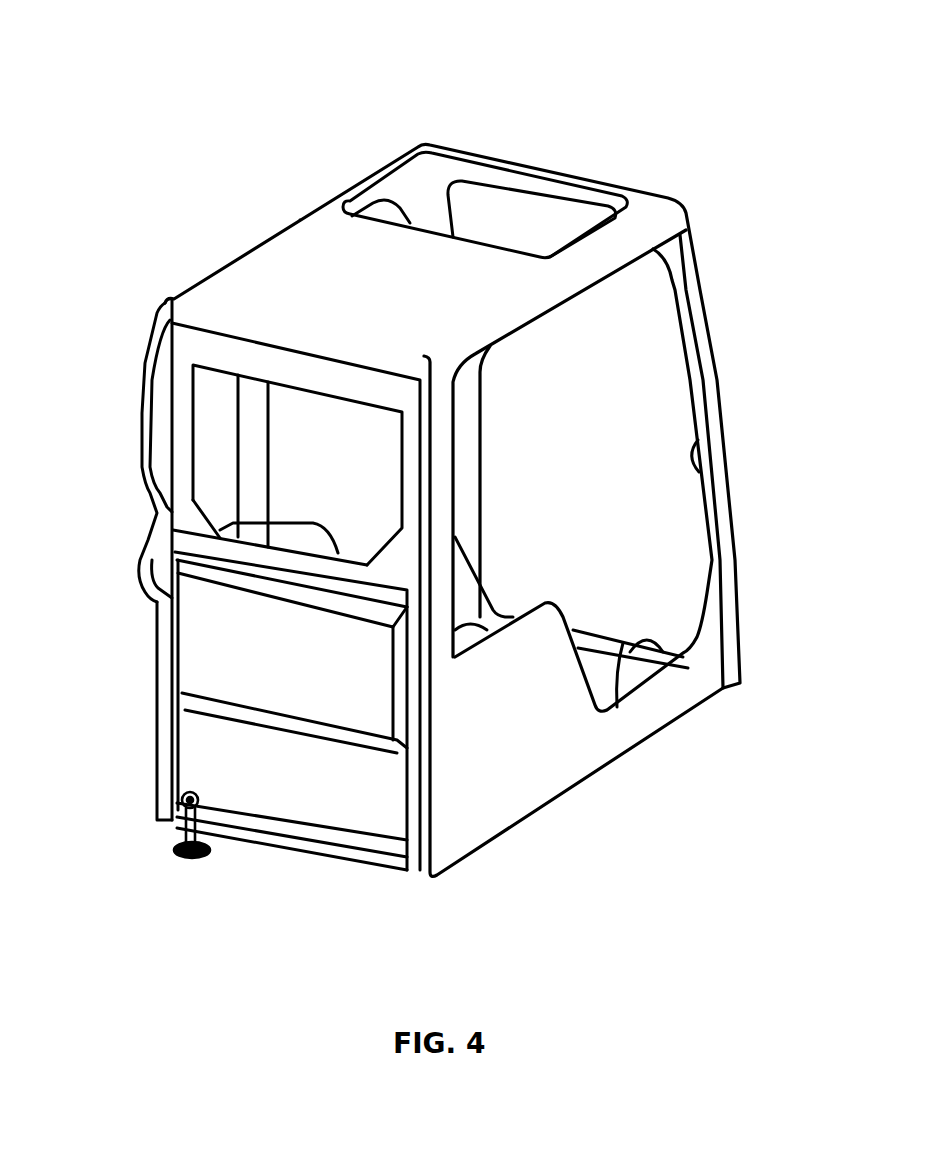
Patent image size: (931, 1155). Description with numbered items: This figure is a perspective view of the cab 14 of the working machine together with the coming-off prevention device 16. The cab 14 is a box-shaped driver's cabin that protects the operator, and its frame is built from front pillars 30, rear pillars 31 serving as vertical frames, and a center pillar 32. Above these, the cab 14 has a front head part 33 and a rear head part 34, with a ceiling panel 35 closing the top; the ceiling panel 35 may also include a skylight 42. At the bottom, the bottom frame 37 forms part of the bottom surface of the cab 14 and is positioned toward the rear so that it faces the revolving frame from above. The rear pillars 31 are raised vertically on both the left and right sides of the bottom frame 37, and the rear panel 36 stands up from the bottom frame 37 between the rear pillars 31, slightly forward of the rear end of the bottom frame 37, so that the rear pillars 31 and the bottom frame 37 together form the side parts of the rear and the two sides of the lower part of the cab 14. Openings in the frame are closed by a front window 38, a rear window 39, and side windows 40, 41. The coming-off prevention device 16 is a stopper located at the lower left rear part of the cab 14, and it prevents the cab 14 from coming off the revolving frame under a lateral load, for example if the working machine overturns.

The cab 14 is at (497, 101).
The coming-off prevention device 16 is at (157, 836).
The front pillar 30 is at (480, 440).
The rear pillar 31 is at (157, 650).
The center pillar 32 is at (268, 421).
The front head part 33 is at (550, 172).
The rear head part 34 is at (264, 322).
The ceiling panel 35 is at (318, 233).
The rear panel 36 is at (291, 797).
The bottom frame 37 is at (362, 853).
The front window 38 is at (720, 483).
The rear window 39 is at (175, 535).
The side window 40 is at (238, 403).
The side window 41 is at (668, 655).
The skylight 42 is at (603, 223).